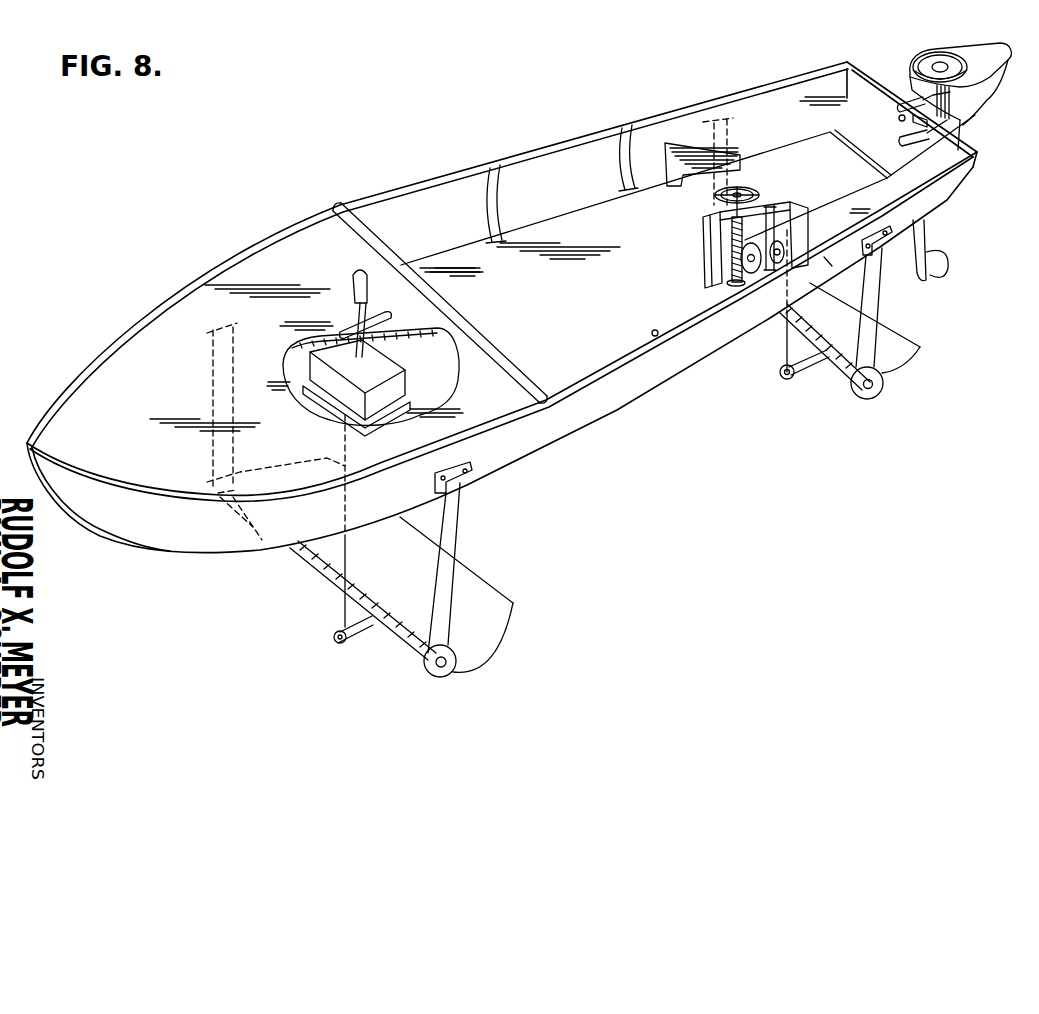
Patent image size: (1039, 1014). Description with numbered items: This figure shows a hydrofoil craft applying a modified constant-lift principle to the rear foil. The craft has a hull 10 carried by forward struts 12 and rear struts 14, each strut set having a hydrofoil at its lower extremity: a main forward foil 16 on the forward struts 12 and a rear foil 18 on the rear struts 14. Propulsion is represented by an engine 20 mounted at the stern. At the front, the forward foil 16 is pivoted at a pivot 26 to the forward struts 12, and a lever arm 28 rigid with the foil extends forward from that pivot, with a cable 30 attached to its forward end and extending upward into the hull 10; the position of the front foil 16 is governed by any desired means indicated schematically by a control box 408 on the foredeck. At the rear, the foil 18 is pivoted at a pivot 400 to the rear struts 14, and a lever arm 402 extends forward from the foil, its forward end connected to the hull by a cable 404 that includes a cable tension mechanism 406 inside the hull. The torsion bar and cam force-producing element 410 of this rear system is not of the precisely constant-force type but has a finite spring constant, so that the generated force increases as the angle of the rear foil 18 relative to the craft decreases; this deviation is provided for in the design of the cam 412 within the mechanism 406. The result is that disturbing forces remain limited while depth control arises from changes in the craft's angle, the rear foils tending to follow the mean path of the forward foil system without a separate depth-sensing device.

The hull structure 10 is at (593, 420).
The forward struts 12 is at (457, 530).
The rearward struts 14 is at (878, 302).
The forward hydrofoil 16 is at (488, 589).
The rear hydrofoil 18 is at (900, 368).
The engine 20 is at (975, 50).
The pivot 26 is at (452, 672).
The lever arm 28 is at (358, 633).
The cable 30 is at (347, 562).
The pivot 400 is at (860, 398).
The lever arm 402 is at (812, 362).
The cable 404 is at (781, 371).
The cable tension mechanism 406 is at (697, 257).
The control box 408 is at (377, 372).
The force-producing element 410 is at (780, 210).
The cam 412 is at (803, 215).